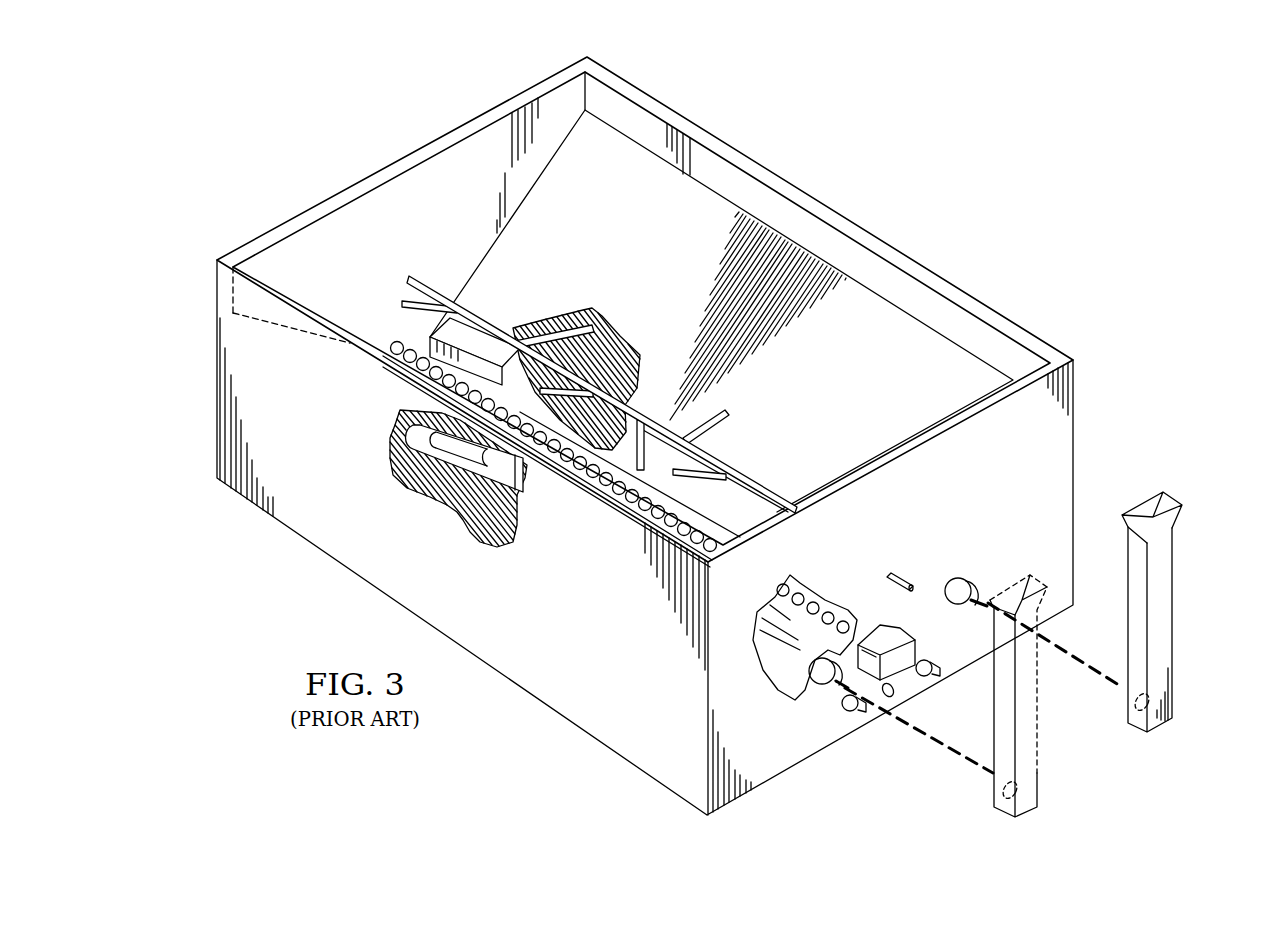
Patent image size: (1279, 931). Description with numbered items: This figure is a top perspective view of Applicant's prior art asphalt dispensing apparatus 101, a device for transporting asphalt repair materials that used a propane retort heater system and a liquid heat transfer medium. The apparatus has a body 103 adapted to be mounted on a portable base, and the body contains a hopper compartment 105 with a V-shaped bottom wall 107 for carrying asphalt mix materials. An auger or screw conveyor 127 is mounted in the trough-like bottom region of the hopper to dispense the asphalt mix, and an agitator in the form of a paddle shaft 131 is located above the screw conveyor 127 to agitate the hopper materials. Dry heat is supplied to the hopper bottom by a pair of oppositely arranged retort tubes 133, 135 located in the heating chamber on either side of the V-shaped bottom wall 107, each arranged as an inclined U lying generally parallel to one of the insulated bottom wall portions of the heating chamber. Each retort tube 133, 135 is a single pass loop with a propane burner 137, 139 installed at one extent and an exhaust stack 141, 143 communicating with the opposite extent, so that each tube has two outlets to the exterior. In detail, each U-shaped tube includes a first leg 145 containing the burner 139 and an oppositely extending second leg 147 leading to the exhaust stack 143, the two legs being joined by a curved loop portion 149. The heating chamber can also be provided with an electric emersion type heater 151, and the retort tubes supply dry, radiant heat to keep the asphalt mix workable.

The prior art asphalt dispensing apparatus 101 is at (978, 126).
The body 103 is at (1078, 483).
The hopper compartment 105 is at (975, 326).
The V-shaped bottom wall 107 is at (640, 157).
The screw conveyor 127 is at (825, 600).
The paddle shaft 131 is at (487, 326).
The retort tube 133 is at (968, 583).
The retort tube 135 is at (823, 687).
The burner 137 is at (937, 664).
The burner 139 is at (877, 720).
The exhaust stack 141 is at (1172, 570).
The exhaust stack 143 is at (1040, 780).
The first leg 145 is at (478, 508).
The second leg 147 is at (523, 495).
The curved loop portion 149 is at (397, 433).
The electric emersion type heater 151 is at (893, 690).